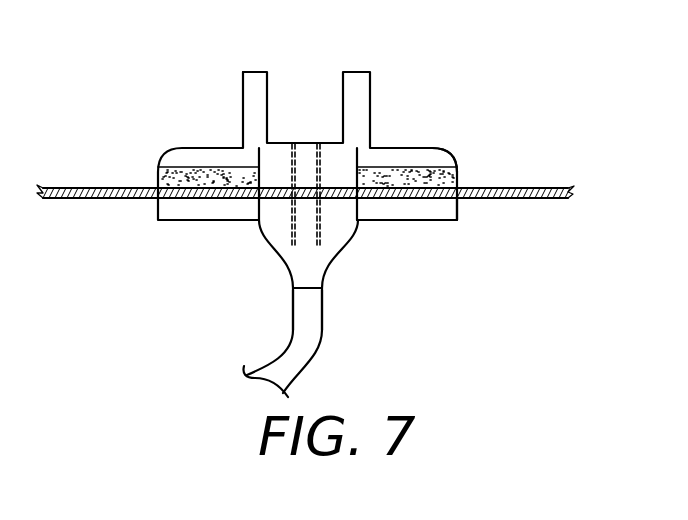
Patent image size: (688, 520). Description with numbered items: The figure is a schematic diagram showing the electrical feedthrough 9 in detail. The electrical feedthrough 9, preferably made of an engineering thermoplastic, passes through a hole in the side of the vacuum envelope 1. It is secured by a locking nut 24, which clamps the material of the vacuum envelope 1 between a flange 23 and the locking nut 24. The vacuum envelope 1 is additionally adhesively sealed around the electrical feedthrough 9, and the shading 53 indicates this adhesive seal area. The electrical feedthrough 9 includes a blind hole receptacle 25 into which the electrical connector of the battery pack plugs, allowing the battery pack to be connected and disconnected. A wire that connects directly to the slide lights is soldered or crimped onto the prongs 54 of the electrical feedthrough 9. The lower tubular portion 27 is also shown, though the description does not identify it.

The vacuum envelope 1 is at (88, 188).
The electrical feedthrough 9 is at (270, 218).
The flange 23 is at (395, 160).
The locking nut 24 is at (403, 213).
The blind hole receptacle 25 is at (303, 112).
The tube 27 is at (307, 323).
The shading 53 is at (455, 168).
The prongs 54 is at (325, 268).